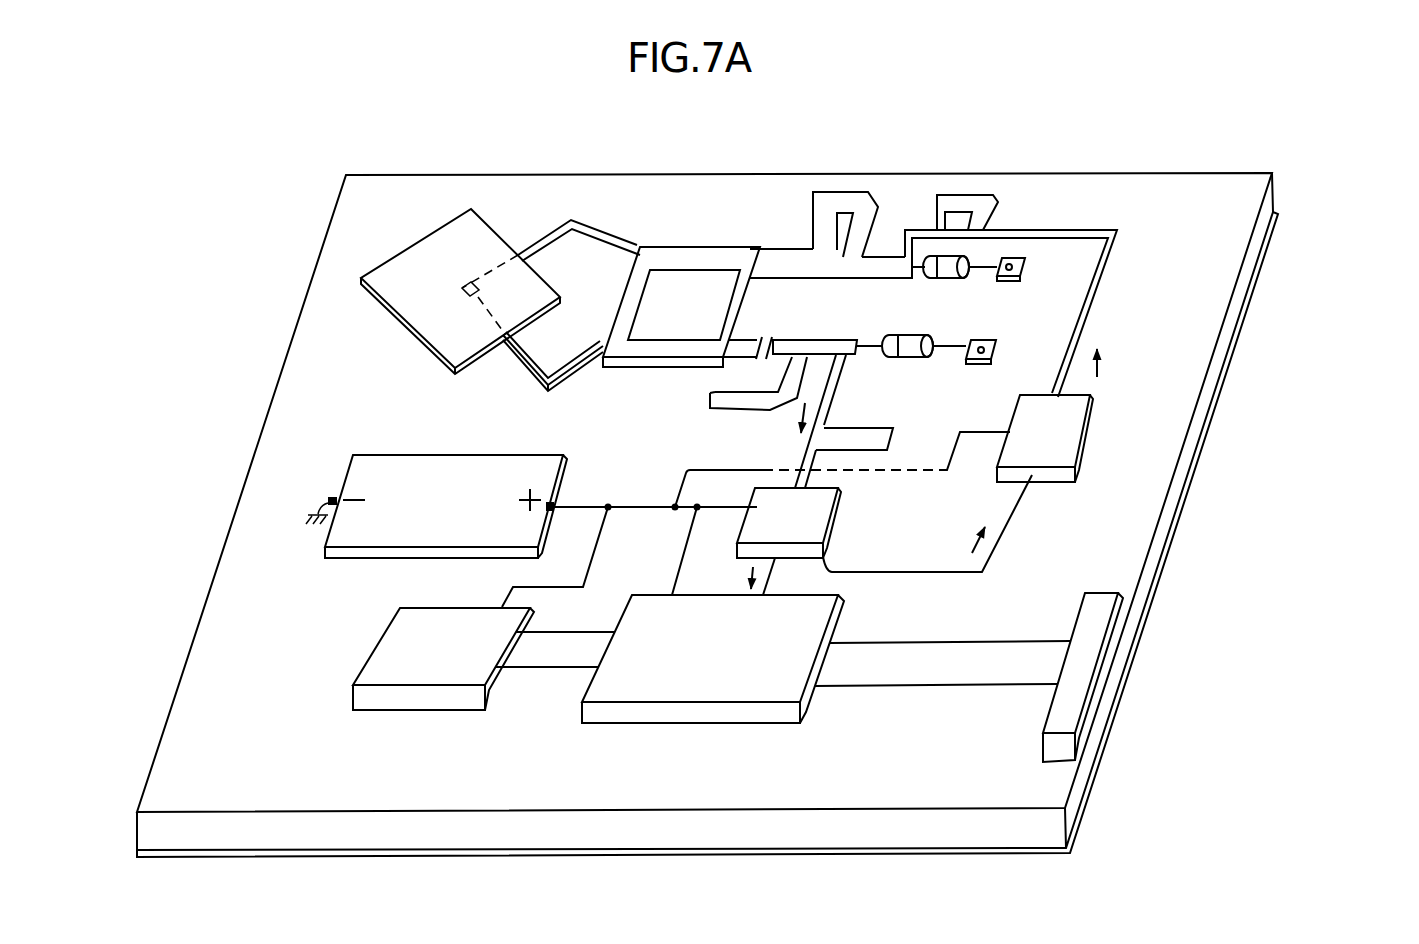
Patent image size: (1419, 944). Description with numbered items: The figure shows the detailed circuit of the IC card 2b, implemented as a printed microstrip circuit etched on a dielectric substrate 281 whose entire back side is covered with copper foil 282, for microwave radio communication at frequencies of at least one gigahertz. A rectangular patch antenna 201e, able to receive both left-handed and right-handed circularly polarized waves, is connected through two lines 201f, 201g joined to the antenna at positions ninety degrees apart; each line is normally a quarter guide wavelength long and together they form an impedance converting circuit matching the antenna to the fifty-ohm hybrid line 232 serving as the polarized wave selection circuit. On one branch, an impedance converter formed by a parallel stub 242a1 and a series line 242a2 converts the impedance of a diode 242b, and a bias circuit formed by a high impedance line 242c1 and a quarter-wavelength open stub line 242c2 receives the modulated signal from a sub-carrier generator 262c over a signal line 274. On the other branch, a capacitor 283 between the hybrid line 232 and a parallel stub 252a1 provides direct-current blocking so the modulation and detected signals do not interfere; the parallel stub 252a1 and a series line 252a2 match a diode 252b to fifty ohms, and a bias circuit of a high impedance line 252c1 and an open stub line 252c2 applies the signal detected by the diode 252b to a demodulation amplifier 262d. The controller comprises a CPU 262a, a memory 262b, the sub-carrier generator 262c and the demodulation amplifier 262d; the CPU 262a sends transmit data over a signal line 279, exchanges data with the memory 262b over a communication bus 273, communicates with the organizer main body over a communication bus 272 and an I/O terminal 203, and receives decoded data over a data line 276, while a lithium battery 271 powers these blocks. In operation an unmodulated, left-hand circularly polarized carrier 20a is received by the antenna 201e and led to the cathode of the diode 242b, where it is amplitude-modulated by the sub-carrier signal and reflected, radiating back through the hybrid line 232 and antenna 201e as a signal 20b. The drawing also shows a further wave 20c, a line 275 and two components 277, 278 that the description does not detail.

The IC card 2b is at (1085, 110).
The unmodulated carrier signal 20a is at (377, 228).
The reflected signal 20b is at (353, 252).
The incident light 20c is at (350, 288).
The rectangular patch antenna 201e is at (418, 257).
The line 201f is at (542, 240).
The line 201g is at (532, 373).
The hybrid line 232 is at (680, 257).
The parallel stub 242a1 is at (836, 203).
The series line 242a2 is at (873, 268).
The diode 242b is at (945, 274).
The high impedance line 242c1 is at (910, 237).
The open stub line 242c2 is at (972, 200).
The parallel stub 252a1 is at (727, 402).
The series line 252a2 is at (826, 334).
The diode 252b is at (910, 357).
The high impedance line 252c1 is at (829, 404).
The open stub line 252c2 is at (870, 432).
The CPU 262a is at (667, 633).
The memory 262b is at (428, 660).
The sub-carrier generator 262c is at (1063, 420).
The demodulation amplifier 262d is at (813, 523).
The lithium battery 271 is at (410, 487).
The communication bus 272 is at (905, 673).
The communication bus 273 is at (548, 652).
The signal line 274 is at (1090, 295).
The wiring 275 is at (803, 477).
The data line 276 is at (767, 580).
The capacitor 277 is at (1023, 262).
The capacitor 278 is at (996, 350).
The signal line 279 is at (1012, 525).
The dielectric substrate 281 is at (1153, 460).
The copper foil 282 is at (1162, 528).
The capacitor 283 is at (772, 337).
The I/O terminal 203 is at (1100, 610).